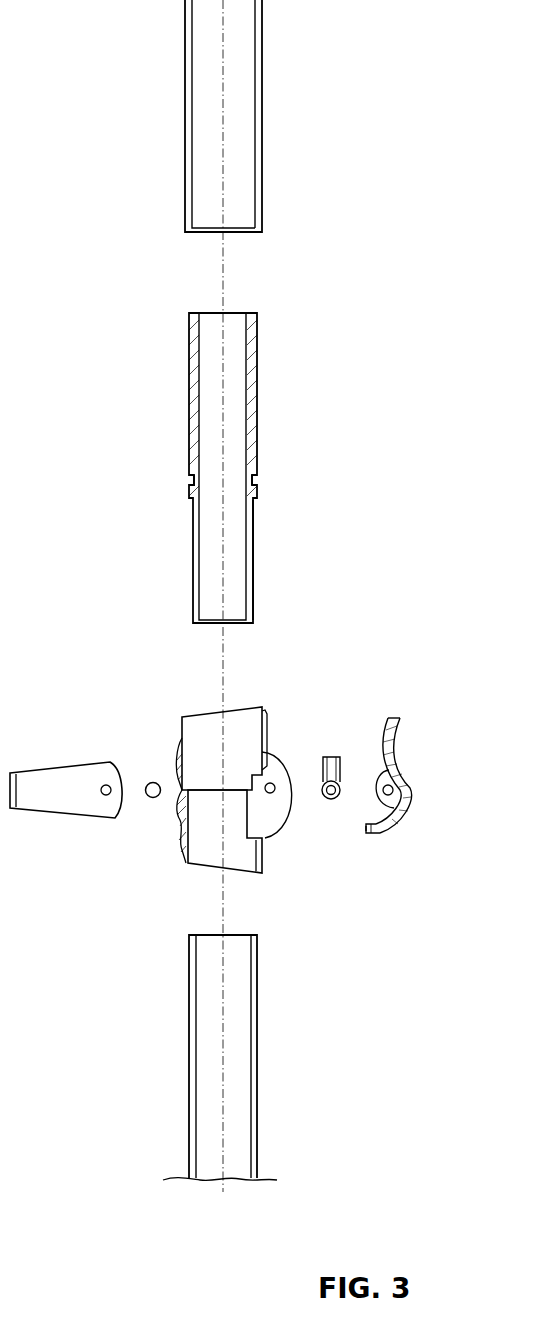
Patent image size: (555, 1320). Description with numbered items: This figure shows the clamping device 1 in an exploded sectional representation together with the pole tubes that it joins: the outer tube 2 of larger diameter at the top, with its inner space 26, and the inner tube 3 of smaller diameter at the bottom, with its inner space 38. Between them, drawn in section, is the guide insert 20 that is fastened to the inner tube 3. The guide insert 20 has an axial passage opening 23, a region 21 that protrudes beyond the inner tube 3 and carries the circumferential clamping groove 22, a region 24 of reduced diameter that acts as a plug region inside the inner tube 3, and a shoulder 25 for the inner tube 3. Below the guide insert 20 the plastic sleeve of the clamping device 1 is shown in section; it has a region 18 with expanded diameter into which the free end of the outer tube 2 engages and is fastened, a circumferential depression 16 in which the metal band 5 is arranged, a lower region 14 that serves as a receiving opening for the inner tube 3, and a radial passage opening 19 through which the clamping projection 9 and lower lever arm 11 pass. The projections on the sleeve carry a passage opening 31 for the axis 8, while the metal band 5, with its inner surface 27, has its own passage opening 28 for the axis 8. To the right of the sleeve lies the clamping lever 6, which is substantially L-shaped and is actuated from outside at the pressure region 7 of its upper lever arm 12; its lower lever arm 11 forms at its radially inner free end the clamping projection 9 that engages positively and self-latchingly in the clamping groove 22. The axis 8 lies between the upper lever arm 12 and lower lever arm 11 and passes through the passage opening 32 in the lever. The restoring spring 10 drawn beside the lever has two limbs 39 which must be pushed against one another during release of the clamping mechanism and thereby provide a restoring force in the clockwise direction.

The clamping device 1 is at (230, 778).
The outer tube 2 is at (221, 116).
The inner tube 3 is at (243, 1057).
The metal band 5 is at (69, 785).
The clamping lever 6 is at (380, 797).
The pressure region 7 is at (4, 652).
The axis 8 is at (150, 795).
The clamping projection 9 is at (367, 827).
The restoring spring 10 is at (349, 741).
The lower lever arm 11 is at (382, 832).
The upper lever arm 12 is at (399, 721).
The lower region 14 is at (185, 848).
The circumferential depression 16 is at (177, 793).
The region with expanded diameter 18 is at (238, 722).
The radial passage opening 19 is at (252, 825).
The guide insert 20 is at (221, 467).
The region protruding beyond inner tube 21 is at (250, 378).
The clamping groove 22 is at (255, 478).
The axial passage opening 23 is at (237, 343).
The region with reduced diameter 24 is at (250, 553).
The shoulder 25 is at (192, 498).
The inner space 26 is at (237, 65).
The inner surface 27 is at (38, 798).
The passage opening 28 is at (108, 785).
The passage opening 31 is at (273, 783).
The passage opening 32 is at (384, 792).
The inner space 38 is at (235, 1115).
The limb 39 is at (343, 765).